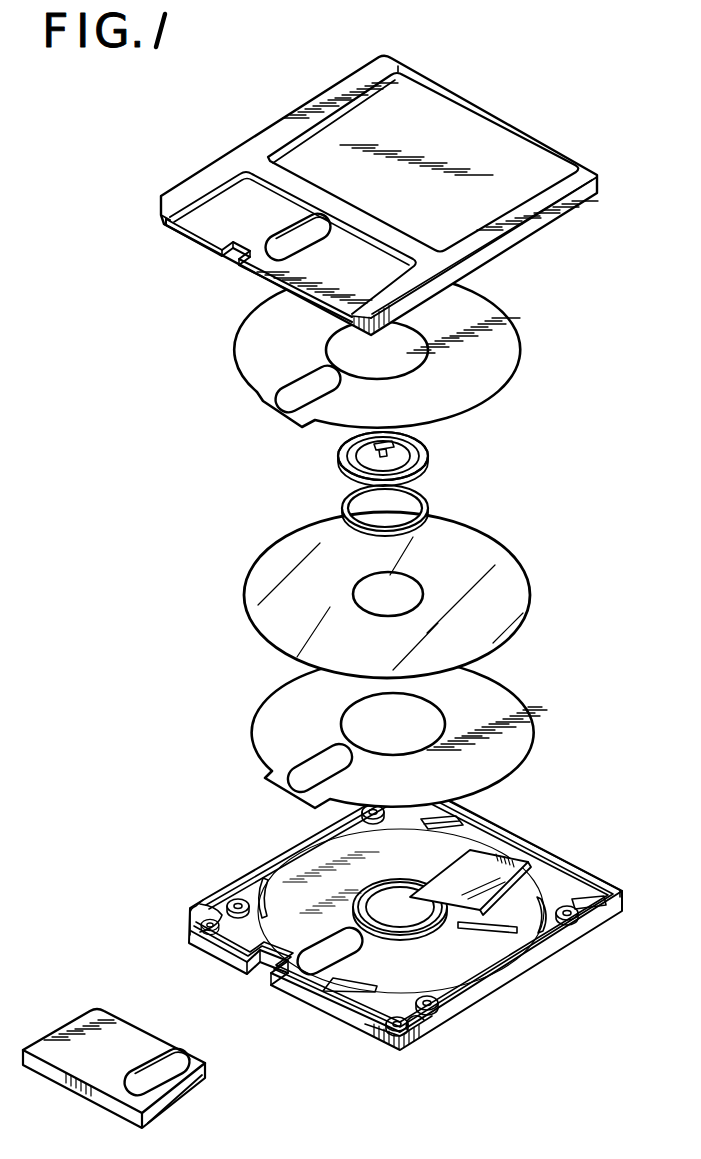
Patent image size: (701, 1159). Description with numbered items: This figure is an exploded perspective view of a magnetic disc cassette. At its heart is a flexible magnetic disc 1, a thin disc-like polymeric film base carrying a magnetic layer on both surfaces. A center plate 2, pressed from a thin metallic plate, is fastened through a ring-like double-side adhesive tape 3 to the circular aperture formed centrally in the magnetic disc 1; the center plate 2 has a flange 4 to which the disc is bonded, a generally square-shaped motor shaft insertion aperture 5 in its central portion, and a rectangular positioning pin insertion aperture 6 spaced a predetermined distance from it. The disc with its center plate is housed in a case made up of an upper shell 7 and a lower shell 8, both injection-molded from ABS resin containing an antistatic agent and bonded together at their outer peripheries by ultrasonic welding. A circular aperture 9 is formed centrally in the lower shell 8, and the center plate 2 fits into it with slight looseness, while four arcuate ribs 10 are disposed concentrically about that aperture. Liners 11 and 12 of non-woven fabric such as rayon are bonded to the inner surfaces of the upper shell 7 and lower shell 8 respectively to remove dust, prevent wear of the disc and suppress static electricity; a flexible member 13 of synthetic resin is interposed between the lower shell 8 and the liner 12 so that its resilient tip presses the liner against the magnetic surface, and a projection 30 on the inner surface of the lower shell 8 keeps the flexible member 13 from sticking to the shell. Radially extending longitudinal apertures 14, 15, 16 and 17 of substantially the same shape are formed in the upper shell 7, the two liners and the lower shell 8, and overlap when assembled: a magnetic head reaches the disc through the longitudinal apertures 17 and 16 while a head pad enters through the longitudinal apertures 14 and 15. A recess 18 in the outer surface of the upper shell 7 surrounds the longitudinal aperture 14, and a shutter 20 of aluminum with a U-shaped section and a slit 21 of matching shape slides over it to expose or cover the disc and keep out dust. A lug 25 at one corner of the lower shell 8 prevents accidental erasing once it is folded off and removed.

The flexible magnetic disc 1 is at (508, 562).
The center plate 2 is at (428, 463).
The ring-like double-side adhesive tape 3 is at (427, 500).
The flange 4 is at (338, 451).
The motor shaft insertion aperture 5 is at (382, 453).
The positioning pin insertion aperture 6 is at (397, 446).
The upper shell 7 is at (562, 208).
The lower shell 8 is at (510, 978).
The circular aperture 9 is at (402, 932).
The arcuate rib 10 is at (260, 890).
The liner 11 is at (492, 310).
The liner 12 is at (508, 700).
The flexible member 13 is at (517, 862).
The longitudinal aperture 14 is at (283, 240).
The longitudinal aperture 15 is at (298, 385).
The longitudinal aperture 16 is at (310, 763).
The longitudinal aperture 17 is at (310, 970).
The recess 18 is at (208, 207).
The shutter 20 is at (77, 1018).
The slit 21 is at (170, 1058).
The lug 25 is at (610, 890).
The projection 30 is at (473, 929).